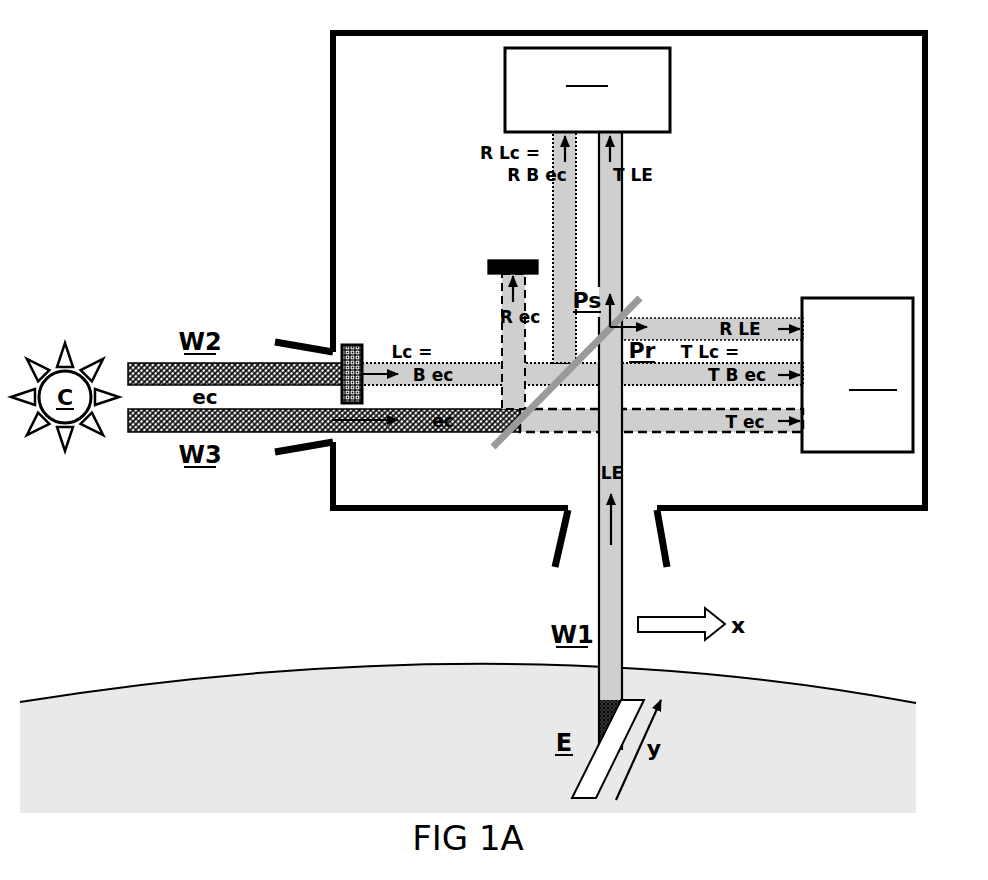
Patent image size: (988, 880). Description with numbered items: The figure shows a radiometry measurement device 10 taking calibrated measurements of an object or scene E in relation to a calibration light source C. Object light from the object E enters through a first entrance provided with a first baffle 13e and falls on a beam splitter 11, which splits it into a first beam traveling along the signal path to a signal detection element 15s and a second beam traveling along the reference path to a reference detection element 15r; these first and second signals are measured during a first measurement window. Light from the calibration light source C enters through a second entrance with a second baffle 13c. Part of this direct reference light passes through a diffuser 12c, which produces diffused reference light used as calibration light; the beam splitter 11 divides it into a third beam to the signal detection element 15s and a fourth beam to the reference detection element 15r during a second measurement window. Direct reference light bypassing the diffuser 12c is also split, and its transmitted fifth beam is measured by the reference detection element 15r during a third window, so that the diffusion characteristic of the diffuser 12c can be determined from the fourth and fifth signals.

The measurement device 10 is at (300, 108).
The beam splitter 11 is at (492, 447).
The diffuser 12c is at (350, 342).
The second baffle 13c is at (263, 338).
The first baffle 13e is at (552, 578).
The signal detection element 15s is at (687, 92).
The reference detection element 15r is at (860, 285).